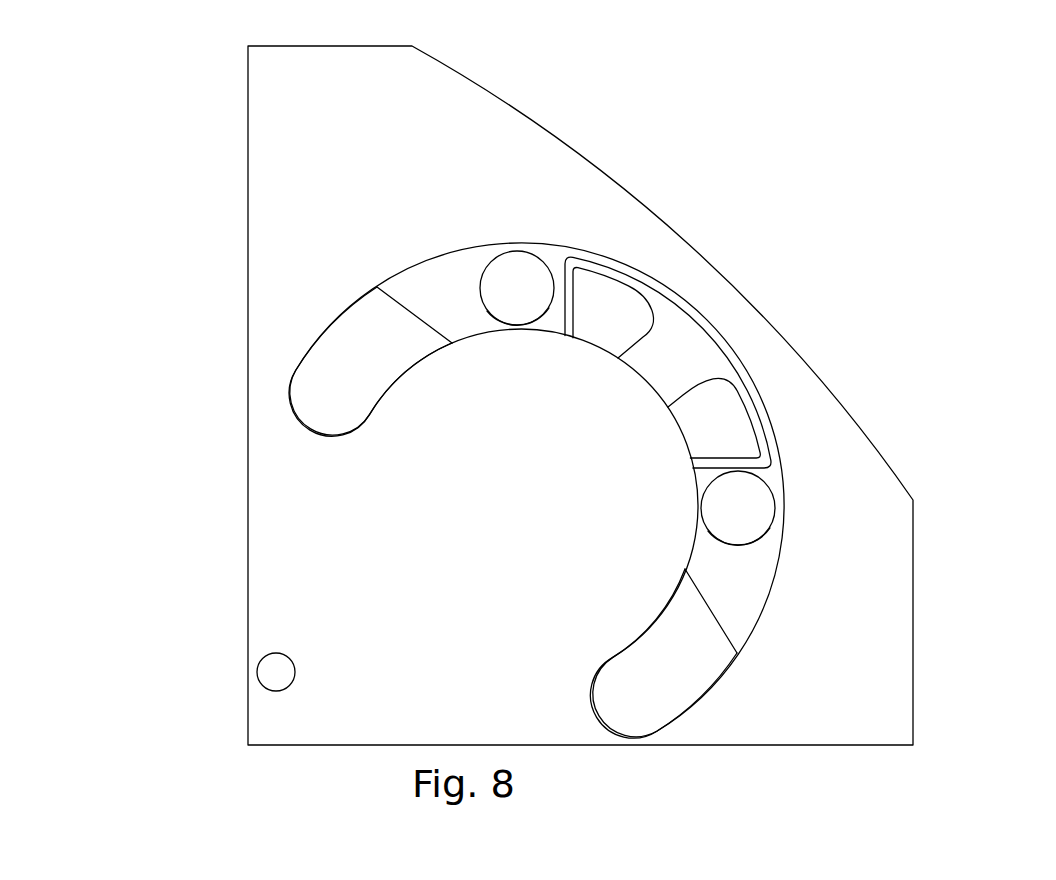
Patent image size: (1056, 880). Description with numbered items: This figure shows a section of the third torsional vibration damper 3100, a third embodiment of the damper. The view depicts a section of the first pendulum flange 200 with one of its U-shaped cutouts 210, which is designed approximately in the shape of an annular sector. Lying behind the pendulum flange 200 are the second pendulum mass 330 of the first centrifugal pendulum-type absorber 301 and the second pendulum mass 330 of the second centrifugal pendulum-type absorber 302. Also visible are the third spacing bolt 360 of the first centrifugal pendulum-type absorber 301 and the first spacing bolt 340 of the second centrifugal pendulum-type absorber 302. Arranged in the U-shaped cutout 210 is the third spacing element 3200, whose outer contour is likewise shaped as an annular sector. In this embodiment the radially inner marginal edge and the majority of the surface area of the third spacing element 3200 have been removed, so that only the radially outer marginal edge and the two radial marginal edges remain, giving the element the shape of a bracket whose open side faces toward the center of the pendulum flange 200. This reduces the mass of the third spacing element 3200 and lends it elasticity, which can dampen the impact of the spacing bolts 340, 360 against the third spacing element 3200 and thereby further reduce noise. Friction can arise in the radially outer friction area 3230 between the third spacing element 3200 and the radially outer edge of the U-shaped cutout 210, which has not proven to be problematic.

The third torsional vibration damper 3100 is at (978, 203).
The first pendulum flange 200 is at (792, 732).
The U-shaped cutout 210 is at (633, 718).
The first centrifugal pendulum-type absorber 301 is at (403, 303).
The second centrifugal pendulum-type absorber 302 is at (740, 610).
The second pendulum mass 330 is at (589, 498).
The third spacing bolt 360 is at (500, 278).
The first spacing bolt 340 is at (750, 522).
The third spacing element 3200 is at (734, 351).
The radially outer friction area 3230 is at (654, 272).